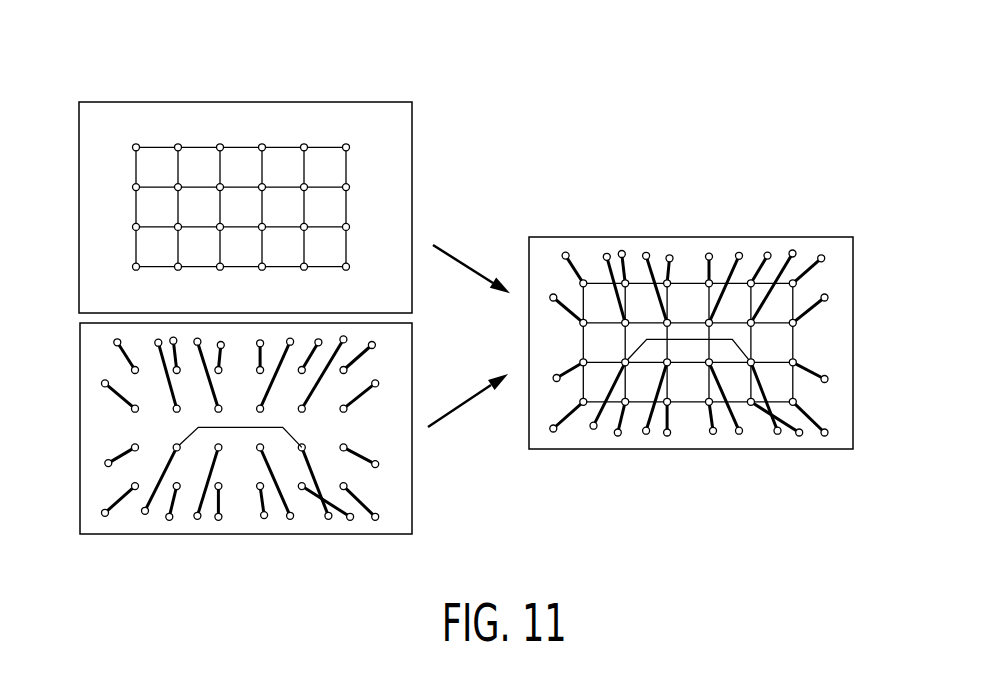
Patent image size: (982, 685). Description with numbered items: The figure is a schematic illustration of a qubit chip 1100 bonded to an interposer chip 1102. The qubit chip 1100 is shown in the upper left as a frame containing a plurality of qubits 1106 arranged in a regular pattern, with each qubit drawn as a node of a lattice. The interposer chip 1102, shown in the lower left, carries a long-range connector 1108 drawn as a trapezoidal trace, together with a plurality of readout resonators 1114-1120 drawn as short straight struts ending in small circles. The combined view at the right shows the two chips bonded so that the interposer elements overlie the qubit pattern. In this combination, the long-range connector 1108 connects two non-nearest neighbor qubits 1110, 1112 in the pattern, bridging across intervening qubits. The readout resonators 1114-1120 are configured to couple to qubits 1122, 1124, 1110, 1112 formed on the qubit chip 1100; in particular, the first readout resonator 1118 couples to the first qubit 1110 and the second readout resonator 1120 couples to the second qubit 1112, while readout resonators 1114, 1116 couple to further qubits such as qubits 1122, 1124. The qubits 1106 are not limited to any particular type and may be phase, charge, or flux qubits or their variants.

The qubit chip 1100 is at (412, 195).
The interposer chip 1102 is at (412, 507).
The qubits 1106 is at (463, 246).
The long-range connector 1108 is at (230, 427).
The first qubit 1110 is at (176, 213).
The second qubit 1112 is at (305, 227).
The readout resonator 1114 is at (118, 457).
The readout resonator 1116 is at (117, 500).
The first readout resonator 1118 is at (152, 499).
The second readout resonator 1120 is at (337, 507).
The qubit 1122 is at (136, 227).
The qubit 1124 is at (136, 266).